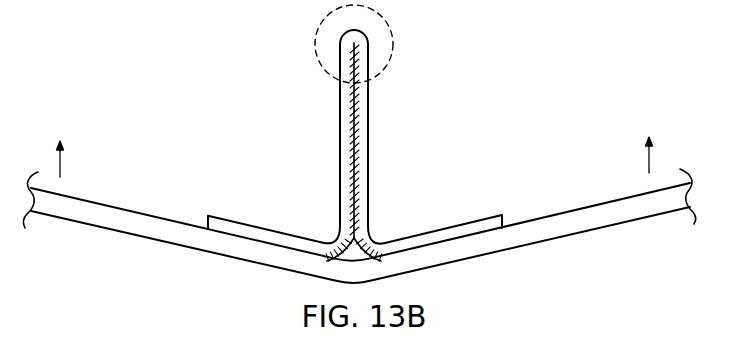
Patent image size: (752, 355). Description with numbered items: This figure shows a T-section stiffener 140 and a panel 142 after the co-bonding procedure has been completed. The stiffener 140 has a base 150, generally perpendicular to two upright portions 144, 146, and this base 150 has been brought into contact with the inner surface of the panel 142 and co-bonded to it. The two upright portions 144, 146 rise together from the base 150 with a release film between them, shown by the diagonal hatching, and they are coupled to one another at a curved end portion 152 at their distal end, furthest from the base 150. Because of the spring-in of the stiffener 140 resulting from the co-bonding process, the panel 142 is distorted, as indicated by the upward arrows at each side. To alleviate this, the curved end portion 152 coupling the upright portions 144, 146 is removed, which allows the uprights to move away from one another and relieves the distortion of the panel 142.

The T-section stiffener 140 is at (347, 145).
The panel 142 is at (118, 231).
The upright portion 144 is at (339, 157).
The upright portion 146 is at (369, 157).
The base 150 is at (258, 227).
The curved end portion 152 is at (393, 45).